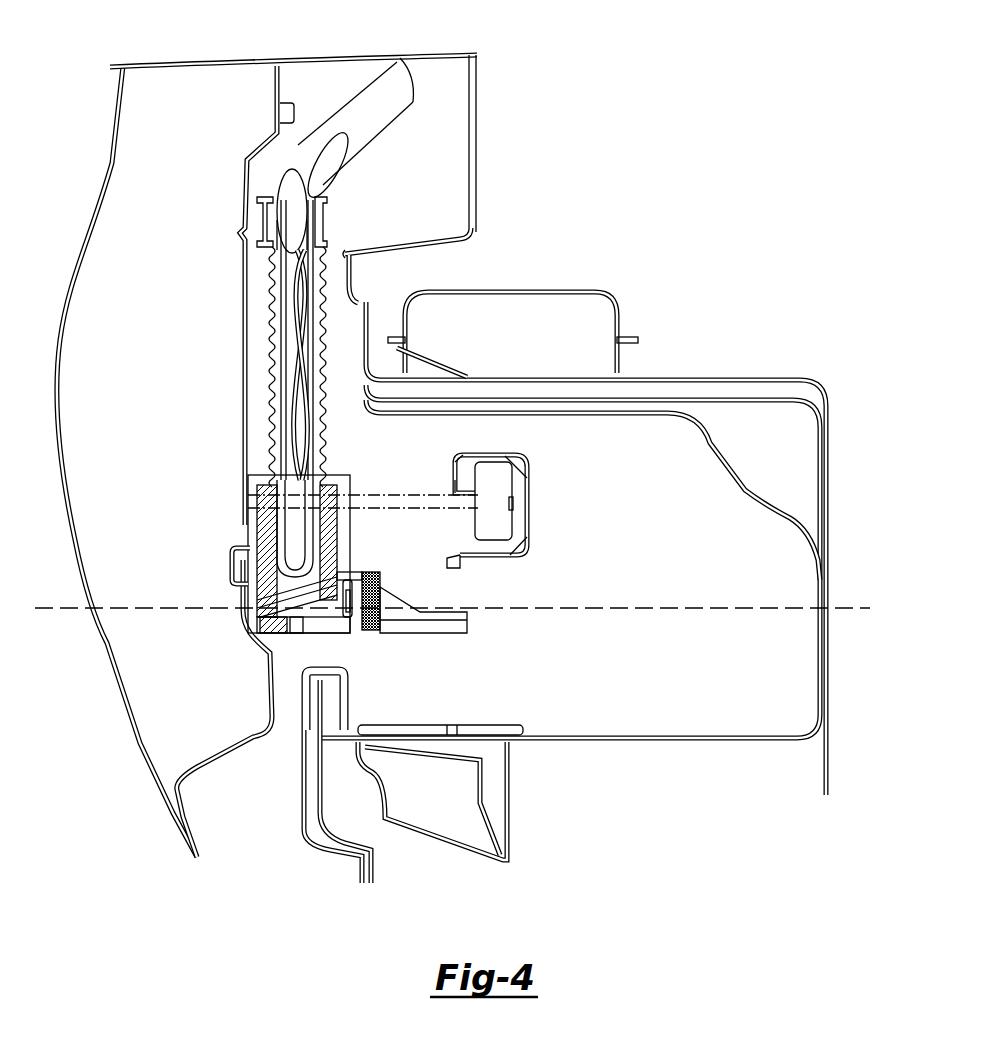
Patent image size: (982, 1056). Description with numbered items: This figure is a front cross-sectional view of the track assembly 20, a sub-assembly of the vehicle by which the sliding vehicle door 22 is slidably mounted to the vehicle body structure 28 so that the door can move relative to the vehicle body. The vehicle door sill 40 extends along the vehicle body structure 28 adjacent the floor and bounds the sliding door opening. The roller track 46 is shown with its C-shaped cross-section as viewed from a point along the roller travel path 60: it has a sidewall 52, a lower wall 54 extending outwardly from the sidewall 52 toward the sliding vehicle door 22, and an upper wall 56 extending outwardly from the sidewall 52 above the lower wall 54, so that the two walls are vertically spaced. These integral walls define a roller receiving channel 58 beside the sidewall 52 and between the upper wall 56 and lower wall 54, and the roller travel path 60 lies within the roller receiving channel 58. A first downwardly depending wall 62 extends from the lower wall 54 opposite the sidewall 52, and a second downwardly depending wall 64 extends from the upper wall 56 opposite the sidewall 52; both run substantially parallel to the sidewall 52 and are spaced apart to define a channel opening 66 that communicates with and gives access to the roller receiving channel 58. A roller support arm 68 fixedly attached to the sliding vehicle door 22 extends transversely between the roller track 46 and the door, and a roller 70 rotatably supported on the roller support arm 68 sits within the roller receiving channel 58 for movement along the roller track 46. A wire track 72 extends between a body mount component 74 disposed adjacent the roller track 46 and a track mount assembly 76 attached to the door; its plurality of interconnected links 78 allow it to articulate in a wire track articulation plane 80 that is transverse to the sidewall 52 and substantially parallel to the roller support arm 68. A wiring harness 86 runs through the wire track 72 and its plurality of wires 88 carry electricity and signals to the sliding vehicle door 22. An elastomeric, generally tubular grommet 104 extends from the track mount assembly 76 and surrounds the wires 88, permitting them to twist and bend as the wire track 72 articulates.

The track assembly 20 is at (148, 618).
The sliding vehicle door 22 is at (243, 270).
The vehicle body structure 28 is at (712, 441).
The vehicle door sill 40 is at (322, 657).
The roller track 46 is at (533, 530).
The sidewall 52 is at (527, 478).
The lower wall 54 is at (492, 556).
The upper wall 56 is at (492, 428).
The roller receiving channel 58 is at (450, 480).
The roller travel path 60 is at (495, 500).
The first downwardly depending wall 62 is at (446, 566).
The second downwardly depending wall 64 is at (453, 473).
The channel opening 66 is at (450, 525).
The roller support arm 68 is at (392, 494).
The roller 70 is at (505, 526).
The wire track 72 is at (385, 567).
The body mount component 74 is at (475, 634).
The track mount assembly 76 is at (242, 578).
The interconnected links 78 is at (347, 622).
The wire track articulation plane 80 is at (720, 606).
The wiring harness 86 is at (380, 141).
The wires 88 is at (287, 178).
The grommet 104 is at (262, 343).